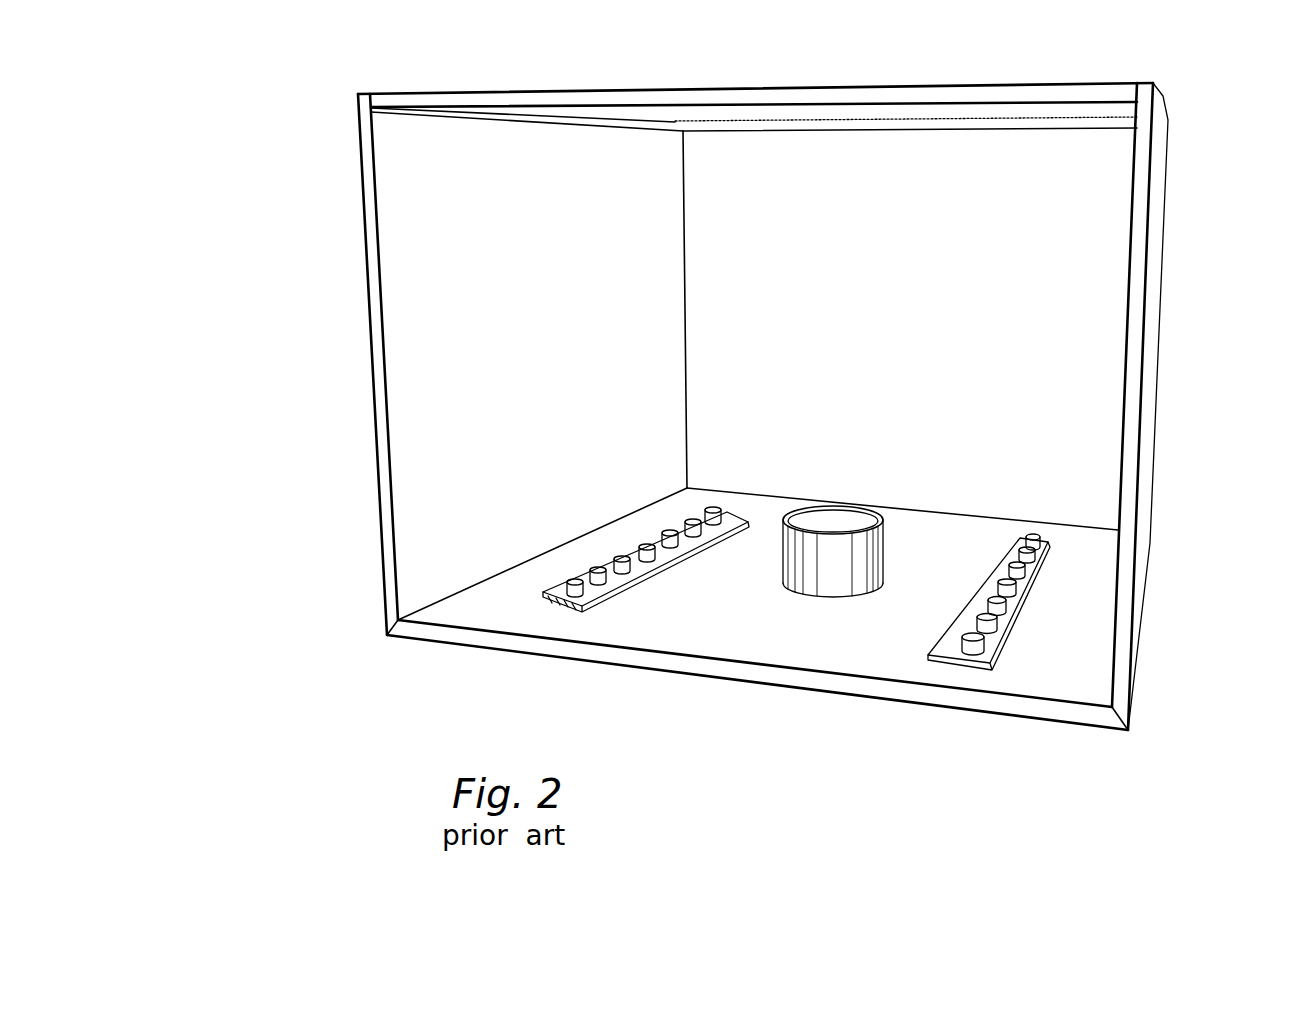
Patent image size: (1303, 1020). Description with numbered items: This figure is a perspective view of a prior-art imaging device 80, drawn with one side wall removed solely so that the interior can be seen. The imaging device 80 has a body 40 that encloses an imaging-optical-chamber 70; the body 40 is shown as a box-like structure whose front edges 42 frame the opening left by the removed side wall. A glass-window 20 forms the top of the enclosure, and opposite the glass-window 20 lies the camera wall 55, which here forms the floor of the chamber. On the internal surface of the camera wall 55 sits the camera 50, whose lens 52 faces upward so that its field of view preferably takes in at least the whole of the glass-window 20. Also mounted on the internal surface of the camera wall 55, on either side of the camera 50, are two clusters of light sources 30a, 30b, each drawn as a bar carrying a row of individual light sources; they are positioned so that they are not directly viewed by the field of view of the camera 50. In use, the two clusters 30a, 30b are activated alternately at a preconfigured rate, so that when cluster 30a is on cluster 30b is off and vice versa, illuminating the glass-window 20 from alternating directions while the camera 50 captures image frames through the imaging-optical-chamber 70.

The glass-window 20 is at (767, 112).
The light source cluster 30a is at (585, 620).
The light source cluster 30b is at (1052, 541).
The body 40 is at (368, 339).
The front edge frame 42 is at (378, 477).
The camera 50 is at (824, 590).
The lens 52 is at (838, 520).
The camera wall 55 is at (887, 692).
The imaging-optical-chamber 70 is at (1082, 240).
The imaging device 80 is at (712, 404).